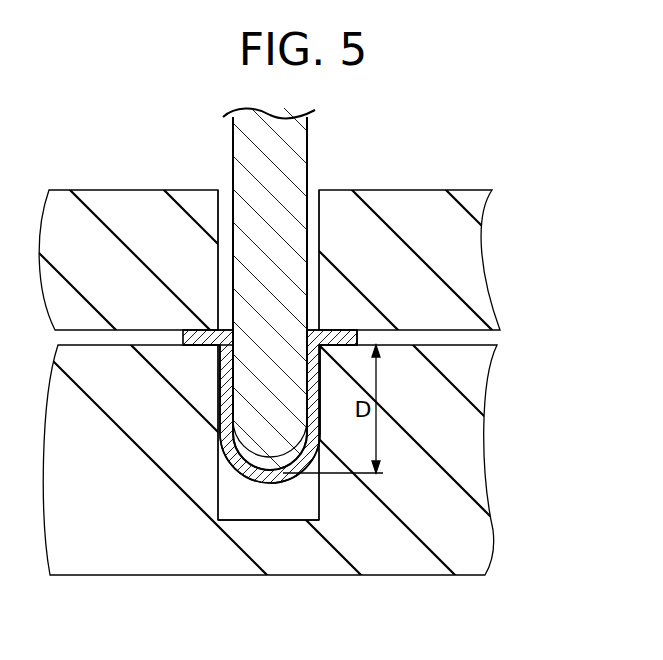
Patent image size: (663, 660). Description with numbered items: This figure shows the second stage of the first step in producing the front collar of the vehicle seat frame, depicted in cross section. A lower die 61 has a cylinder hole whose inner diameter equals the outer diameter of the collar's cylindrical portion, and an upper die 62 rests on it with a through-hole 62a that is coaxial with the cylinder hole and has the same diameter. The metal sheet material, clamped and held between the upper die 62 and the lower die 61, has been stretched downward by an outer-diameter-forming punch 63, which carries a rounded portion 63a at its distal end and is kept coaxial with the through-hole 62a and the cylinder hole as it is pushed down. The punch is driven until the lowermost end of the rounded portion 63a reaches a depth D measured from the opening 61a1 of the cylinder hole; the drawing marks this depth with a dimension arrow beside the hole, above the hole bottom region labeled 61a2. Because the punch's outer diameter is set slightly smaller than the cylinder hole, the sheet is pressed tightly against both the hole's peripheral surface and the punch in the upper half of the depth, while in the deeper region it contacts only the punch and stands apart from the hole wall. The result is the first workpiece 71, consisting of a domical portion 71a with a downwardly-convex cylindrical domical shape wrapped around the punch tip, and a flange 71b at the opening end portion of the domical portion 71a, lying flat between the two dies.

The lower die 61 is at (485, 408).
The upper die 62 is at (481, 248).
The outer-diameter-forming punch 63 is at (305, 135).
The through-hole 62a is at (219, 213).
The opening 61a1 is at (221, 385).
The hole bottom 61a2 is at (282, 519).
The rounded portion 63a is at (235, 475).
The first workpiece 71 is at (331, 330).
The domical portion 71a is at (255, 468).
The flange 71b is at (337, 330).